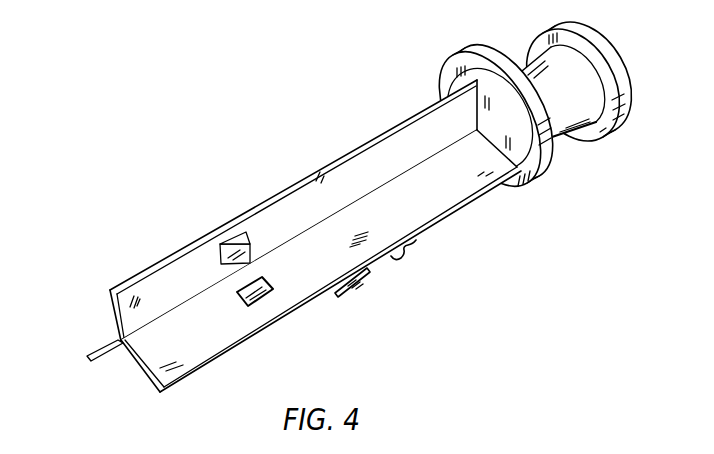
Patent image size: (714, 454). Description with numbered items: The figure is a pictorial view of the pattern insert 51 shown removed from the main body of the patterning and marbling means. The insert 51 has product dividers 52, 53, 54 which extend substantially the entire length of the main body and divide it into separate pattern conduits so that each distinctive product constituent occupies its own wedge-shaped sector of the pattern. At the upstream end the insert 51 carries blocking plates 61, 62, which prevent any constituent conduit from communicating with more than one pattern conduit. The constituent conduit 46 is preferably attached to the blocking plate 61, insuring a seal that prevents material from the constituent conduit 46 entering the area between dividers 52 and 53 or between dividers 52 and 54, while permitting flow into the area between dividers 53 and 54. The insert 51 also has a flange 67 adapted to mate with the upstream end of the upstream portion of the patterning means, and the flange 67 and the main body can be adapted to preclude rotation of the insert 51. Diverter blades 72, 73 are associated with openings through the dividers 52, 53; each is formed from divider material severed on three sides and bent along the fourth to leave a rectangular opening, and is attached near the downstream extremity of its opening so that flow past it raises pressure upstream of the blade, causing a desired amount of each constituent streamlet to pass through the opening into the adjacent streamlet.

The constituent conduit 46 is at (576, 136).
The pattern insert 51 is at (287, 236).
The product divider 52 is at (317, 219).
The product divider 53 is at (310, 275).
The product divider 54 is at (85, 350).
The blocking plate 61 is at (494, 133).
The blocking plate 62 is at (394, 257).
The flange 67 is at (541, 172).
The diverter blade 72 is at (220, 265).
The diverter blade 73 is at (238, 299).